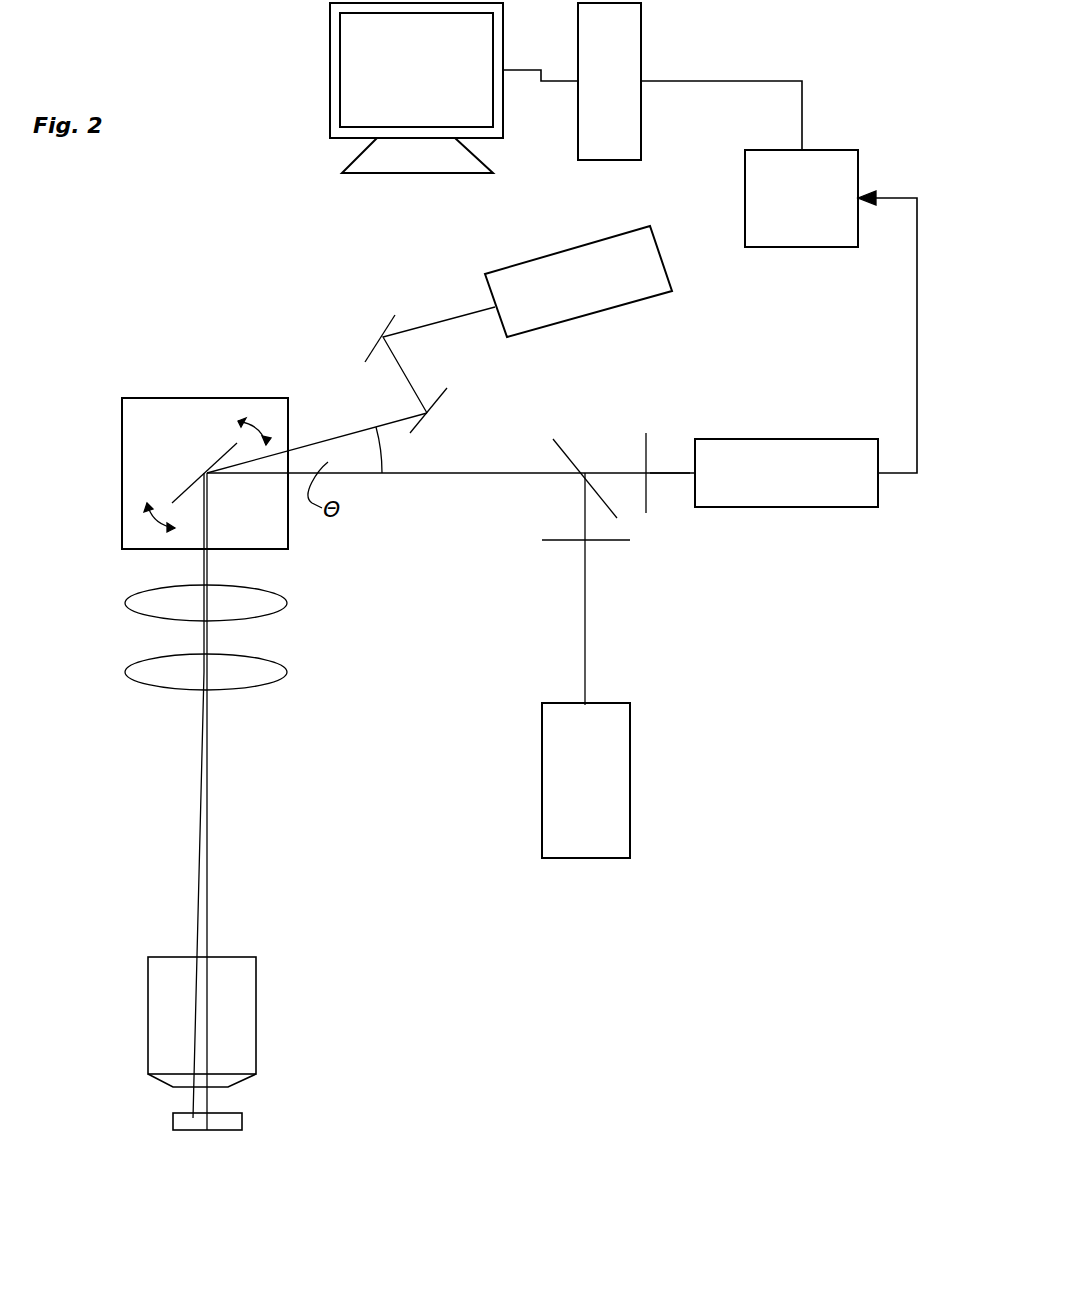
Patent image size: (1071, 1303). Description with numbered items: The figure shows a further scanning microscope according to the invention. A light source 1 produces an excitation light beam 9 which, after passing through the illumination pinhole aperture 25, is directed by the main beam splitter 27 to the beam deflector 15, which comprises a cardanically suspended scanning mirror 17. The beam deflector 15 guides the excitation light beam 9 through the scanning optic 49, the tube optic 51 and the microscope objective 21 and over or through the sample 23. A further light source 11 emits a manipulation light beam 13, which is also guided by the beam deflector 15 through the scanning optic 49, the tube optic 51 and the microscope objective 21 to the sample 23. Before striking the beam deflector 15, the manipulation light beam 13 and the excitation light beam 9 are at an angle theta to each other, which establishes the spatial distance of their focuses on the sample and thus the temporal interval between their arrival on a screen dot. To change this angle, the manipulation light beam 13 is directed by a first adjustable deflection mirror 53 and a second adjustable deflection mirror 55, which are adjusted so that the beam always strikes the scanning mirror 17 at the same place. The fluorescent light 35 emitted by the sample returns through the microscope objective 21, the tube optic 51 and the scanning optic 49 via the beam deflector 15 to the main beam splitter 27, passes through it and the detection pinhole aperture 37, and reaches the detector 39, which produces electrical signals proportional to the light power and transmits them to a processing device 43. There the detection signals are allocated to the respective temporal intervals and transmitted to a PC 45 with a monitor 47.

The light source 1 is at (585, 783).
The excitation light beam 9 is at (585, 626).
The further light source 11 is at (555, 270).
The manipulation light beam 13 is at (442, 320).
The beam deflector 15 is at (180, 438).
The cardanically suspended scanning mirror 17 is at (194, 485).
The microscope objective 21 is at (155, 1032).
The sample 23 is at (187, 1123).
The illumination pinhole aperture 25 is at (567, 542).
The main beam splitter 27 is at (568, 457).
The fluorescent light 35 is at (670, 463).
The detection pinhole aperture 37 is at (645, 457).
The detector 39 is at (747, 478).
The processing device 43 is at (822, 173).
The PC 45 is at (615, 37).
The monitor 47 is at (393, 60).
The scanning optic 49 is at (163, 600).
The tube optic 51 is at (157, 666).
The first adjustable deflection mirror 53 is at (395, 318).
The second adjustable deflection mirror 55 is at (447, 388).